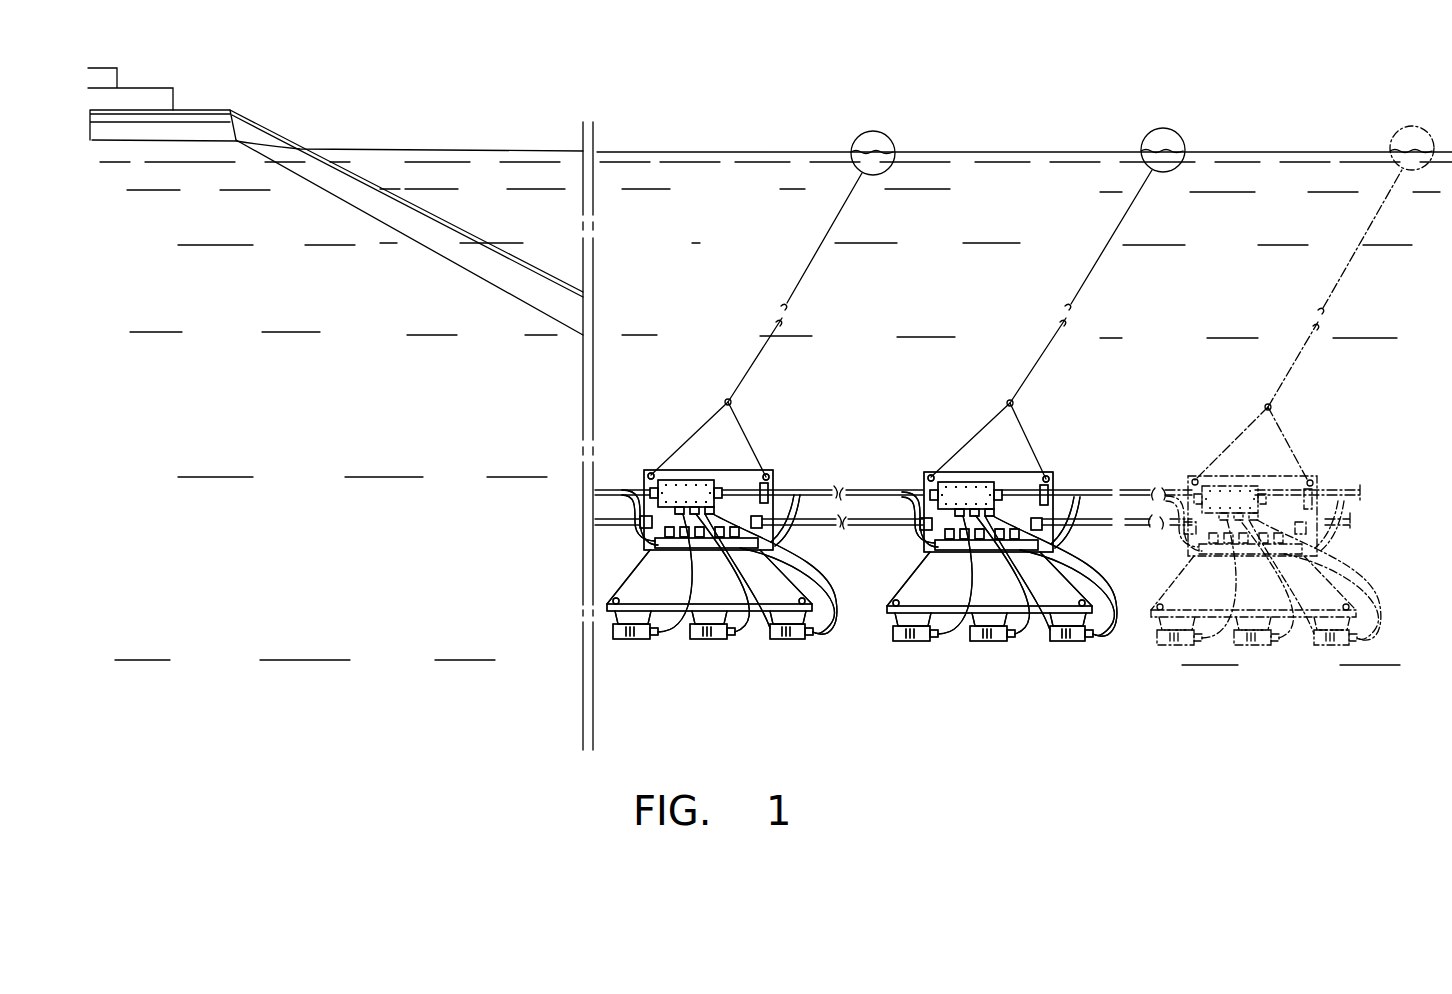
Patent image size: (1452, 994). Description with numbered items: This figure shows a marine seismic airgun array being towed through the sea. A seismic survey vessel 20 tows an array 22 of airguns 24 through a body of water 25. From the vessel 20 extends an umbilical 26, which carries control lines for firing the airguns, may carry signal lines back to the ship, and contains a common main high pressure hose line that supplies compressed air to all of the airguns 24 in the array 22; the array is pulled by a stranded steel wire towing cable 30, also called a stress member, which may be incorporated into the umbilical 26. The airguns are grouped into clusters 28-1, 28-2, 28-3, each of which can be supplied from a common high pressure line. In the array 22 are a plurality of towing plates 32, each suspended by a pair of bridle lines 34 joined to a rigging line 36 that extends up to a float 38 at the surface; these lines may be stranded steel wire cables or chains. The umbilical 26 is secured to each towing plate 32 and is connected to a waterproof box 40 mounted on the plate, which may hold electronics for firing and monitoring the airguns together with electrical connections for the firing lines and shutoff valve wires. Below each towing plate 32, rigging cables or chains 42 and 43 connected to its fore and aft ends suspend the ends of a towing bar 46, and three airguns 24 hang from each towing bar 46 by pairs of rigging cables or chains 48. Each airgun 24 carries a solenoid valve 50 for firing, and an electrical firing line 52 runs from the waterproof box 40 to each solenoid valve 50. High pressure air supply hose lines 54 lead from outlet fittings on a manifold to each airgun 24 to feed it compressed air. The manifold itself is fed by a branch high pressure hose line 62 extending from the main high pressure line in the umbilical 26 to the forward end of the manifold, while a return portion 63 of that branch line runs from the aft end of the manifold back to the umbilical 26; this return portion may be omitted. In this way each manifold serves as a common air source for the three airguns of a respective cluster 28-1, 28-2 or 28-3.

The seismic survey vessel 20 is at (200, 95).
The array 22 is at (1338, 401).
The airguns 24 is at (642, 630).
The body of water 25 is at (1232, 311).
The umbilical 26 is at (282, 146).
The cluster 28-1 is at (790, 688).
The cluster 28-2 is at (1070, 688).
The cluster 28-3 is at (1306, 668).
The towing cable 30 is at (362, 208).
The towing plates 32 is at (738, 475).
The bridle lines 34 is at (727, 399).
The rigging line 36 is at (814, 250).
The float 38 is at (879, 132).
The waterproof box 40 is at (706, 462).
The rigging cable 42 is at (628, 575).
The rigging cable 43 is at (792, 577).
The towing bar 46 is at (672, 606).
The rigging cables 48 is at (604, 620).
The solenoid valve 50 is at (655, 638).
The electrical firing line 52 is at (706, 566).
The high pressure air supply hose lines 54 is at (712, 566).
The branch high pressure hose line 62 is at (634, 509).
The return portion 63 is at (789, 496).